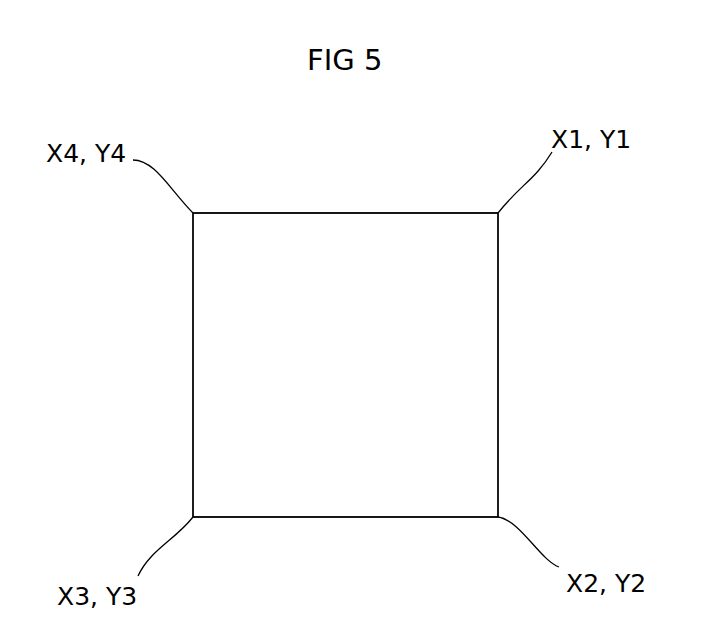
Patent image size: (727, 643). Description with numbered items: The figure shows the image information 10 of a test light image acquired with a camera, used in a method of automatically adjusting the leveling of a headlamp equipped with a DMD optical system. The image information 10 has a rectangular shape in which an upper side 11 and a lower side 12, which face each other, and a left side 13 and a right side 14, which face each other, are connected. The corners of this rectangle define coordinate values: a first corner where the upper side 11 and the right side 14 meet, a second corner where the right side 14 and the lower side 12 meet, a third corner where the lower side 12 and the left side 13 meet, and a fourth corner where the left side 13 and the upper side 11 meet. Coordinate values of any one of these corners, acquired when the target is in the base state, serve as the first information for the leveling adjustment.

The image information 10 is at (165, 420).
The upper side 11 is at (351, 213).
The lower side 12 is at (350, 517).
The left side 13 is at (193, 364).
The right side 14 is at (498, 364).